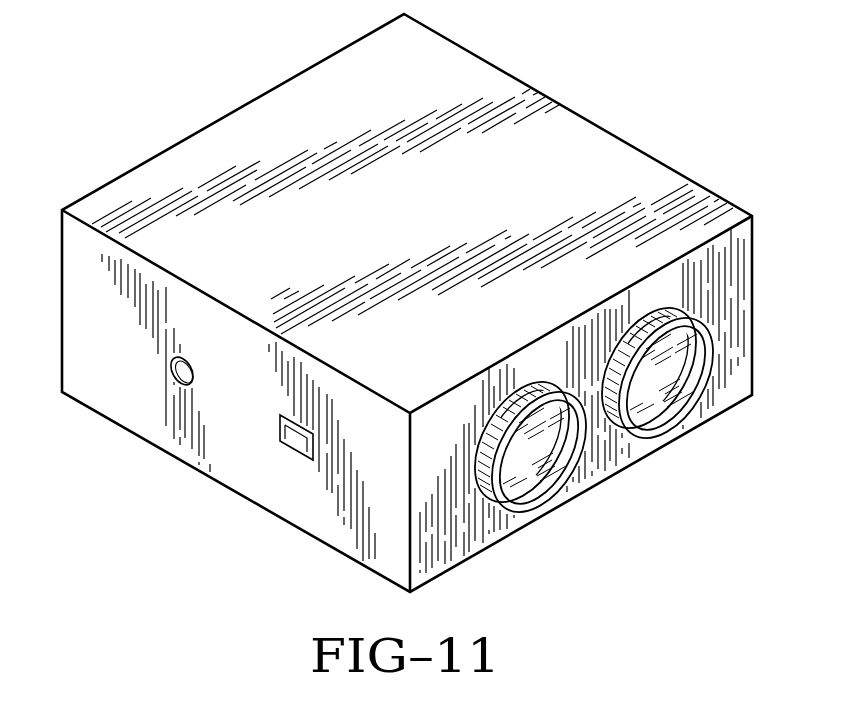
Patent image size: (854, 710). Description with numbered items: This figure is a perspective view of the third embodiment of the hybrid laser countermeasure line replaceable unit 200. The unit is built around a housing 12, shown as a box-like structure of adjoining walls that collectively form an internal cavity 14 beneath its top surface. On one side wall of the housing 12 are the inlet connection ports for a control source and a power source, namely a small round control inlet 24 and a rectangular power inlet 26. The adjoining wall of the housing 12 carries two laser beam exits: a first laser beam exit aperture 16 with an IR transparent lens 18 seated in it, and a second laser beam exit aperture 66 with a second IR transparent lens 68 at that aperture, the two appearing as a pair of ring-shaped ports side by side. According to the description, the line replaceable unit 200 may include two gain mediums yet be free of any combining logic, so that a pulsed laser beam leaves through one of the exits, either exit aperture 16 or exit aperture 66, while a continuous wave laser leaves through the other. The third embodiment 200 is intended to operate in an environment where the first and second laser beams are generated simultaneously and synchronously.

The hybrid laser countermeasure line replaceable unit 200 is at (385, 303).
The housing 12 is at (385, 303).
The internal cavity 14 is at (327, 117).
The control inlet 24 is at (173, 372).
The power inlet 26 is at (297, 447).
The laser beam exit aperture 16 is at (538, 469).
The IR transparent lens 18 is at (540, 450).
The second laser beam exit aperture 66 is at (667, 395).
The second IR transparent lens 68 is at (670, 375).